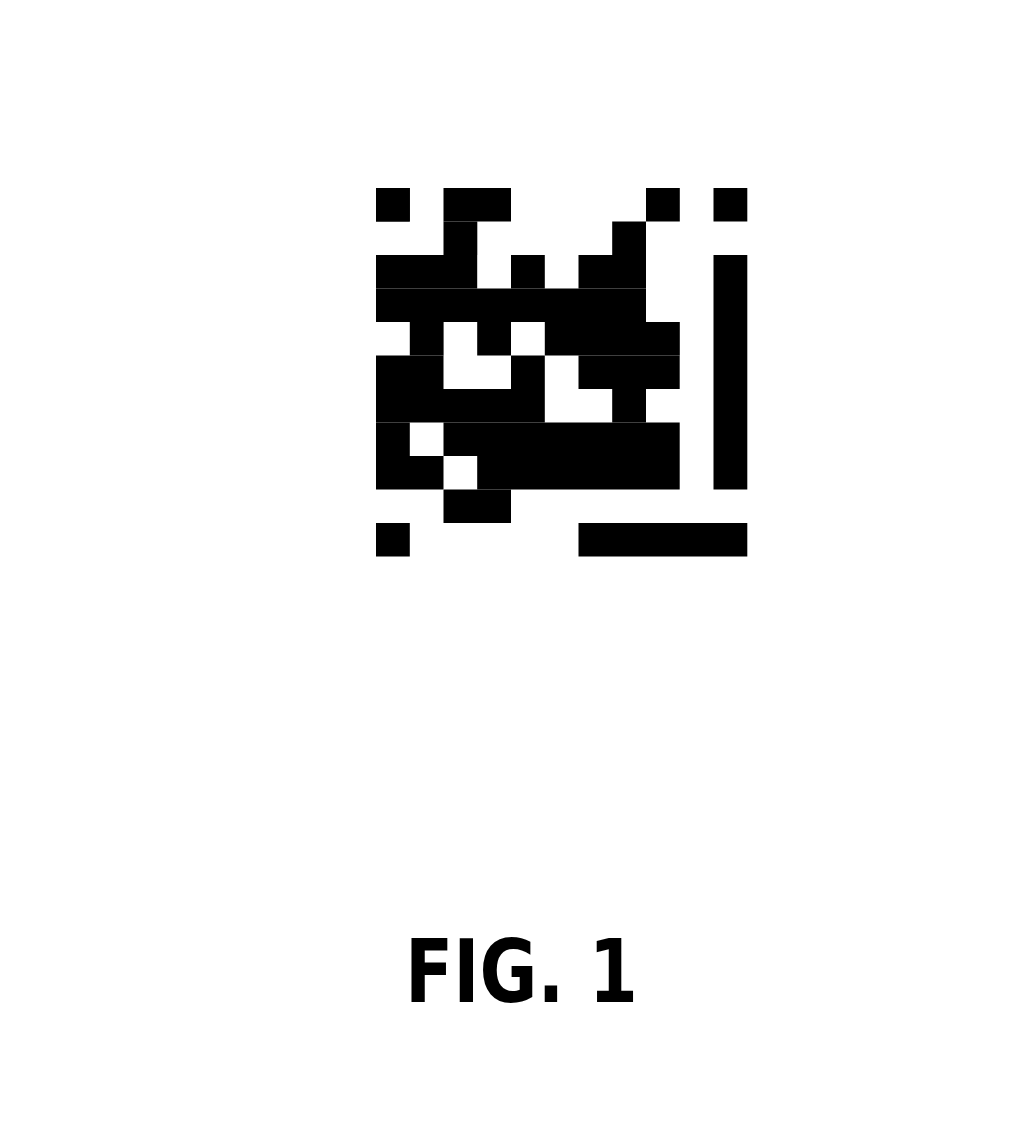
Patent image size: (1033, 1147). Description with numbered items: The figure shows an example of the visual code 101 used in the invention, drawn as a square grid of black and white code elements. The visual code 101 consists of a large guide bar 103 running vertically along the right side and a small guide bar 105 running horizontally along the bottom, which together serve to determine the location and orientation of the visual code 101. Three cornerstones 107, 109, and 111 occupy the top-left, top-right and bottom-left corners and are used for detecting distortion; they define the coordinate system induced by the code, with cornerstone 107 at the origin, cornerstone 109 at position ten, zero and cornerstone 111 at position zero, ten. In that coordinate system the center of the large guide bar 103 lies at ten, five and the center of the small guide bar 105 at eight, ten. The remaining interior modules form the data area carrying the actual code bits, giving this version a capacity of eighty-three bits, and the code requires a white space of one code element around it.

The visual code 101 is at (488, 366).
The large guide bar 103 is at (765, 355).
The small guide bar 105 is at (666, 578).
The cornerstone 107 is at (350, 173).
The cornerstone 109 is at (751, 166).
The cornerstone 111 is at (348, 571).